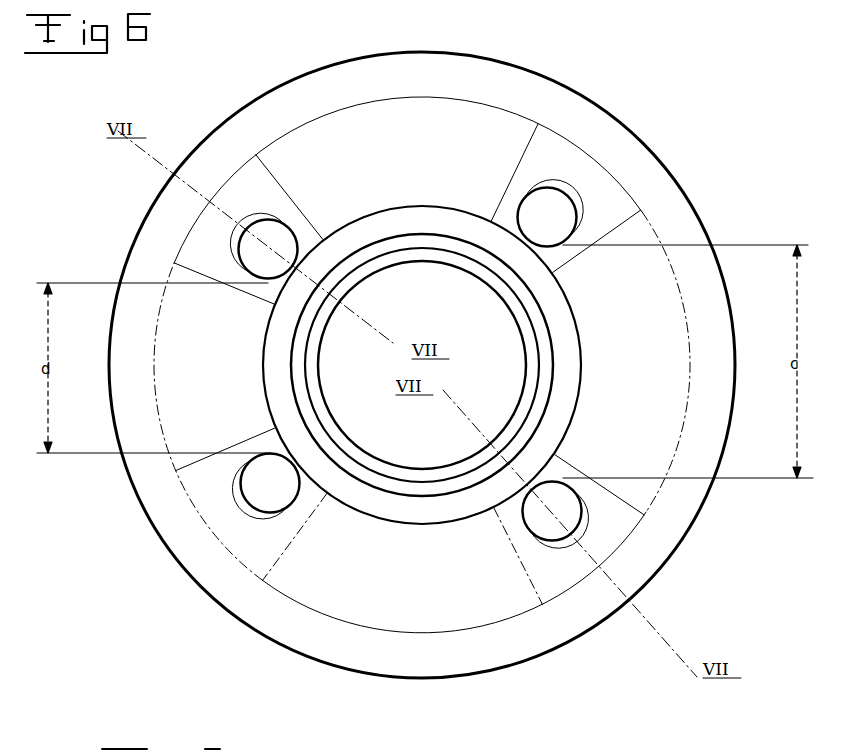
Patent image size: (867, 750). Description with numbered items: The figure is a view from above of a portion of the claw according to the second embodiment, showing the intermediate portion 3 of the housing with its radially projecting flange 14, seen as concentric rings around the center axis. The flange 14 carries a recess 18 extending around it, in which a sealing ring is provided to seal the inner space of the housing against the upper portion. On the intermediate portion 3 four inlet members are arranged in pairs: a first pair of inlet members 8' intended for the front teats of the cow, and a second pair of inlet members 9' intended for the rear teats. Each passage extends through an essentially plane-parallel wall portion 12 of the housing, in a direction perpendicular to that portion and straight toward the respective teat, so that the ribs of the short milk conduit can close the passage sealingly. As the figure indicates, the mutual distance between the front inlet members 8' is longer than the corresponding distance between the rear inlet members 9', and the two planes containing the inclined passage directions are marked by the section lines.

The intermediate portion 3 is at (428, 124).
The wall portion 12 is at (257, 177).
The radially projecting flange 14 is at (373, 232).
The recess 18 is at (432, 237).
The inlet member 9' is at (194, 369).
The inlet member 8' is at (638, 364).